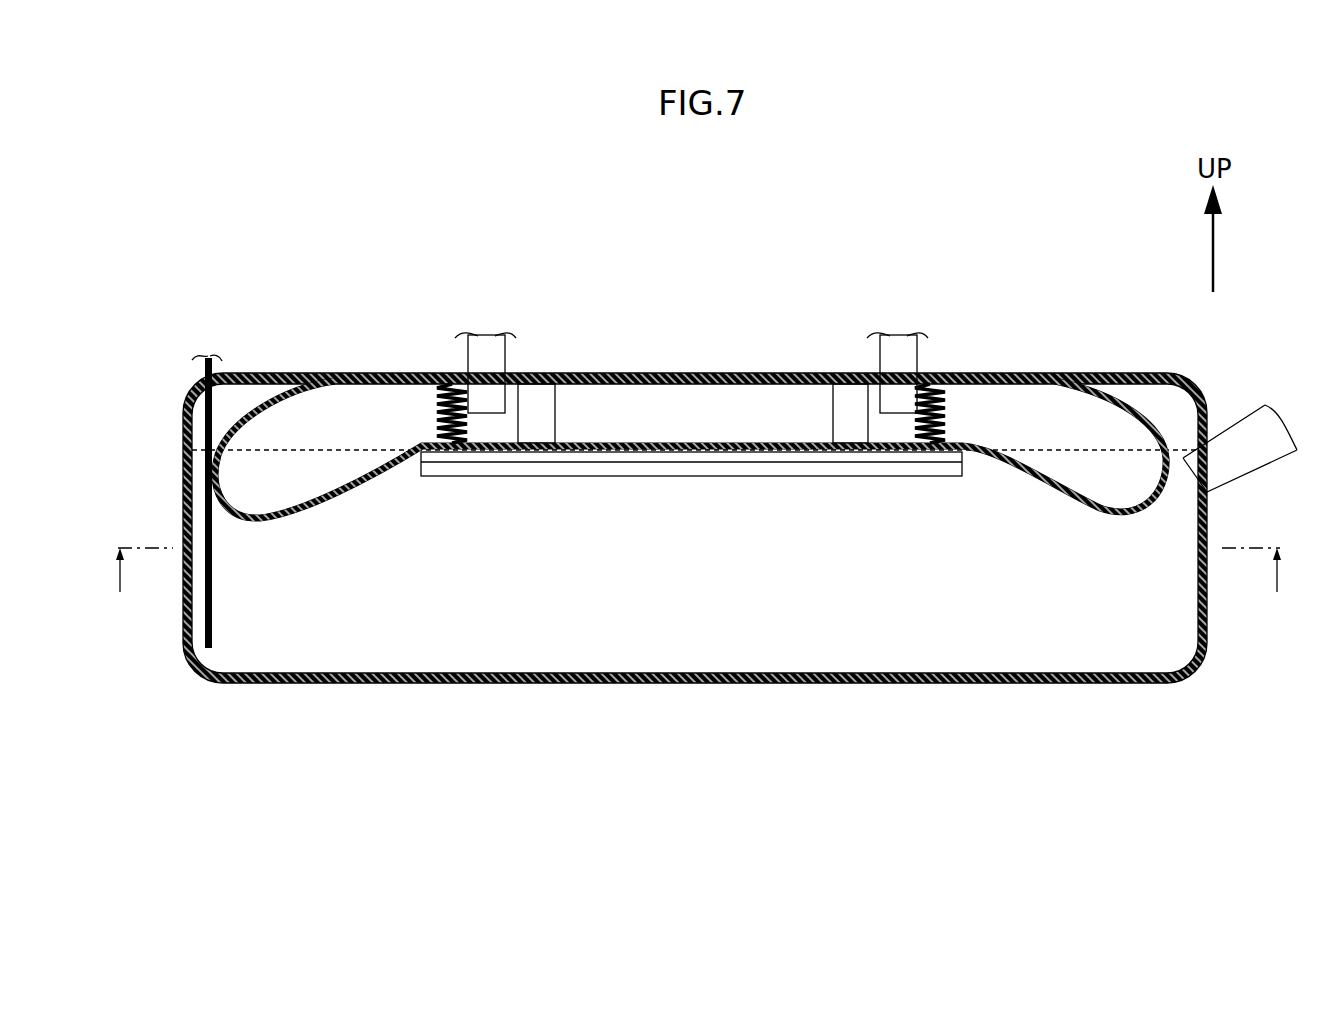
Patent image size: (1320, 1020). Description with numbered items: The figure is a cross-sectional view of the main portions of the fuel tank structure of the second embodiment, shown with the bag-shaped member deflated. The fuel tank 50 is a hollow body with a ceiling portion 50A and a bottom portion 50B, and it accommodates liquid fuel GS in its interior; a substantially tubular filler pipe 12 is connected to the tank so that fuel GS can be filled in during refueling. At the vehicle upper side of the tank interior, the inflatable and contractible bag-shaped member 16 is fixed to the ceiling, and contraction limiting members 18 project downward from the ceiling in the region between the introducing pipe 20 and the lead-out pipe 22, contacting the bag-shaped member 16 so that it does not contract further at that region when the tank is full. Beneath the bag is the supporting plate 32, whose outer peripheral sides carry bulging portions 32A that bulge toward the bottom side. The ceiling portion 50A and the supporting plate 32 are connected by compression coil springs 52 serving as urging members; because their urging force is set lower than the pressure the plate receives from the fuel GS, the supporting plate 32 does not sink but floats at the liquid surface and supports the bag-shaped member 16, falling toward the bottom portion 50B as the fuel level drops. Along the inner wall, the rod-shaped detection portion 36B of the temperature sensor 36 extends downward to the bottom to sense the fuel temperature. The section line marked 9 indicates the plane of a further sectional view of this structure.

The fuel tank 50 is at (695, 532).
The ceiling portion 50A is at (260, 380).
The bottom portion 50B is at (374, 680).
The fuel GS is at (982, 660).
The bag-shaped member 16 is at (1139, 410).
The supporting plate 32 is at (691, 512).
The bulging portions 32A is at (718, 478).
The introducing pipe 20 is at (505, 352).
The lead-out pipe 22 is at (917, 350).
The contraction limiting members 18 is at (555, 410).
The compression coil springs 52 is at (437, 408).
The filler pipe 12 is at (1241, 415).
The temperature sensor 36 is at (290, 501).
The detection portion 36B is at (212, 588).
The section line 9 is at (698, 588).